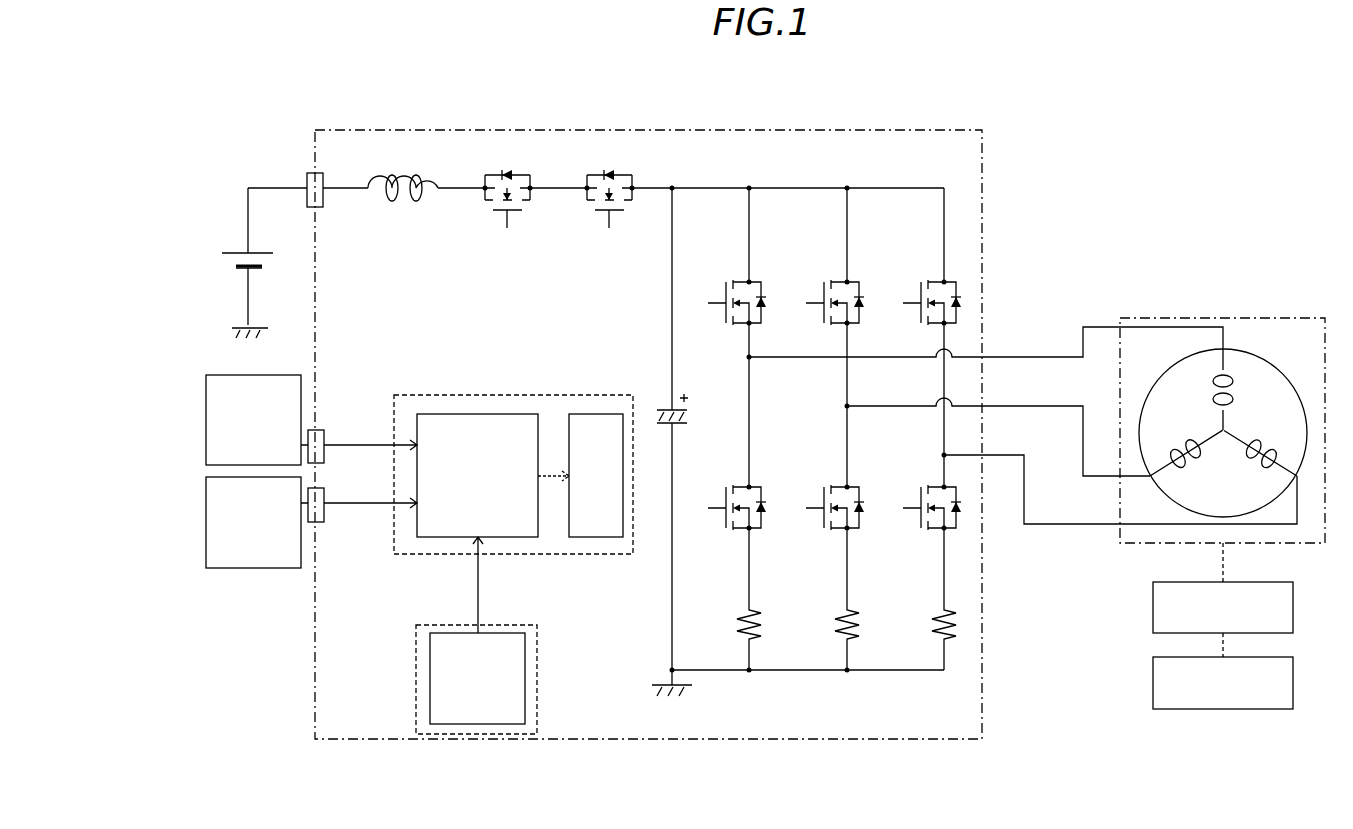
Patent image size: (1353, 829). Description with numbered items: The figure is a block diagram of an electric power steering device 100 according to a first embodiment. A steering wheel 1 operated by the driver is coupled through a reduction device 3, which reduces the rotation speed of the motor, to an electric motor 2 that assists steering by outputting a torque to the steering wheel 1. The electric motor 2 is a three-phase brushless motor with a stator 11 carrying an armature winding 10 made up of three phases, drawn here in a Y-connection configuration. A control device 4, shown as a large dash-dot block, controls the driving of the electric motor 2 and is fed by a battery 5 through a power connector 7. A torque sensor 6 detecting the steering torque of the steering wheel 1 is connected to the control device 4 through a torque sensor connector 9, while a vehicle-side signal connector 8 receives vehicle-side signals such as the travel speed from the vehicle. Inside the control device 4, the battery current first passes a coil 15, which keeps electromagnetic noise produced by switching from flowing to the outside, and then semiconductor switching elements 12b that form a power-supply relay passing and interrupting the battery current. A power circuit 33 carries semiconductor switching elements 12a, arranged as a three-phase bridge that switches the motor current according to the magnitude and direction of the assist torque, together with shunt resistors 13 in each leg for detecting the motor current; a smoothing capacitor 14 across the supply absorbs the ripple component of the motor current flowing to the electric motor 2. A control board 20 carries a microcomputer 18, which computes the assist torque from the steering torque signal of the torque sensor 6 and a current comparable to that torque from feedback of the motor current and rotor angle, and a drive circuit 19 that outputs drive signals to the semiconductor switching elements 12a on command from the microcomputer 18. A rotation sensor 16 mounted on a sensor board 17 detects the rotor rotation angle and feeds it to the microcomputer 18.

The steering wheel 1 is at (1153, 687).
The electric motor 2 is at (1222, 391).
The reduction device 3 is at (1153, 603).
The control device 4 is at (714, 128).
The battery 5 is at (235, 250).
The torque sensor 6 is at (250, 570).
The power connector 7 is at (312, 176).
The vehicle-side signal connector 8 is at (320, 437).
The torque sensor connector 9 is at (322, 515).
The armature winding 10 is at (1213, 388).
The stator 11 is at (1262, 353).
The semiconductor switching elements 12a is at (962, 298).
The semiconductor switching elements 12b is at (507, 172).
The shunt resistors 13 is at (954, 648).
The smoothing capacitor 14 is at (662, 405).
The coil 15 is at (405, 172).
The rotation sensor 16 is at (478, 724).
The sensor board 17 is at (515, 703).
The microcomputer 18 is at (473, 435).
The drive circuit 19 is at (597, 414).
The control board 20 is at (513, 445).
The power circuit 33 is at (807, 175).
The electric power steering device 100 is at (797, 806).